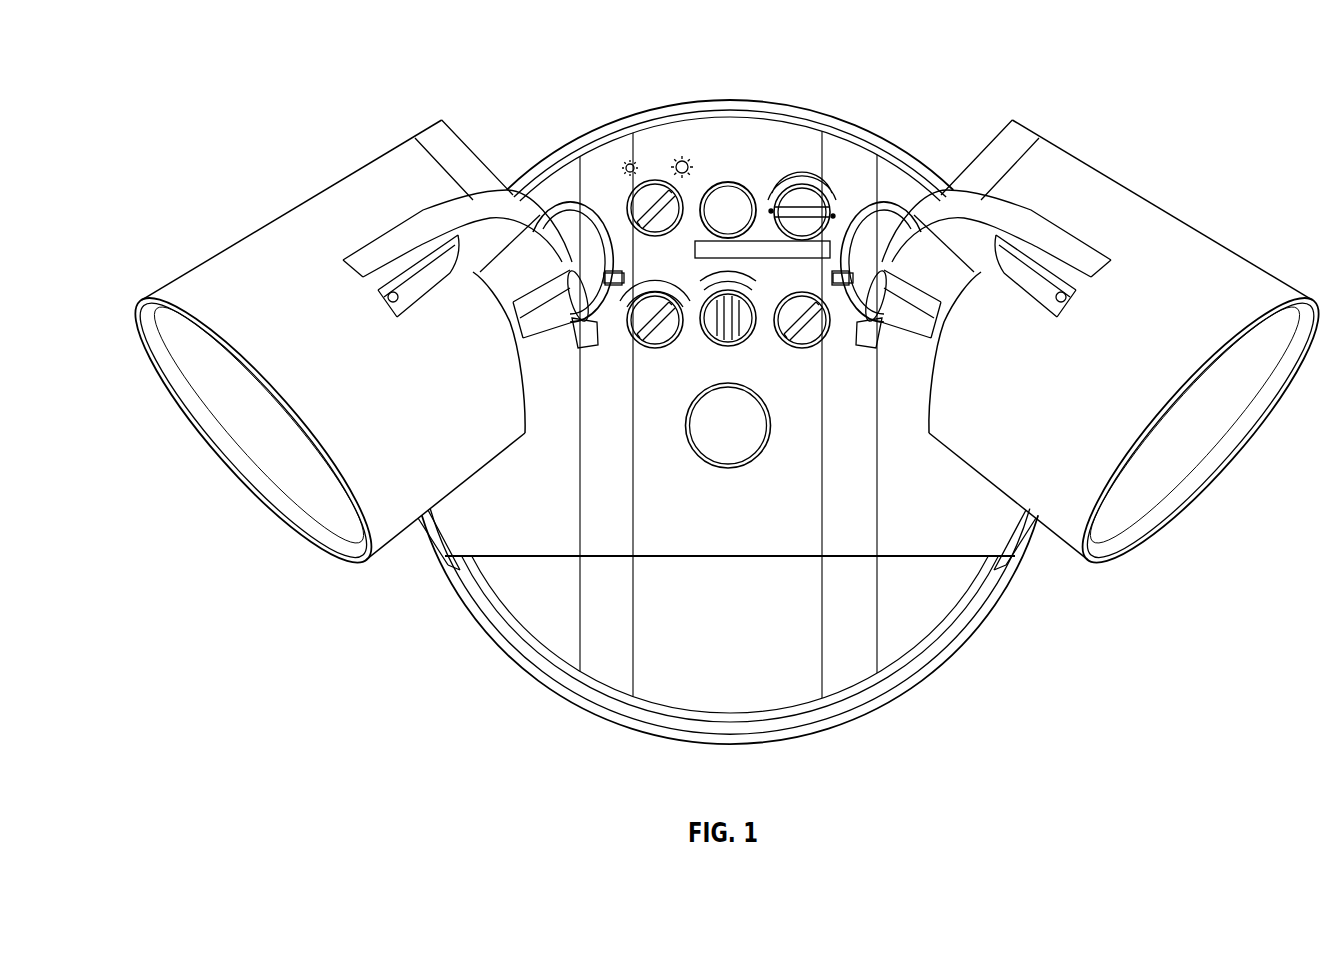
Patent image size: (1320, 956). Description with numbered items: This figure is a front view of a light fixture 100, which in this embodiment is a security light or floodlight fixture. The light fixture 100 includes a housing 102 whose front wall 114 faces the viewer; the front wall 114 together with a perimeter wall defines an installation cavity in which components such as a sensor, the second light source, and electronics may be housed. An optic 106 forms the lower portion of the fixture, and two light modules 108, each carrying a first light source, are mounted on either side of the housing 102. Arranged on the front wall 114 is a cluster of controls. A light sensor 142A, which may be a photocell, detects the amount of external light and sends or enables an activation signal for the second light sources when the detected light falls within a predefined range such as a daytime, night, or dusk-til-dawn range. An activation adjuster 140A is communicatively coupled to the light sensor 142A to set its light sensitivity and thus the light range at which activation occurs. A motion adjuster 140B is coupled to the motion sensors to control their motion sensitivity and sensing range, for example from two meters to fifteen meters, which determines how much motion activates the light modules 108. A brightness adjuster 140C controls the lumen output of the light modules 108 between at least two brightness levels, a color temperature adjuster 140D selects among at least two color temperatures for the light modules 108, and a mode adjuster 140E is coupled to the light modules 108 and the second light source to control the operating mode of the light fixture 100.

The light fixture 100 is at (701, 412).
The housing 102 is at (853, 175).
The optic 106 is at (807, 678).
The light modules 108 is at (312, 215).
The front wall 114 is at (595, 162).
The activation adjuster 140A is at (795, 213).
The motion adjuster 140B is at (728, 328).
The brightness adjuster 140C is at (650, 203).
The color temperature adjuster 140D is at (653, 323).
The mode adjuster 140E is at (808, 323).
The light sensor 142A is at (743, 213).